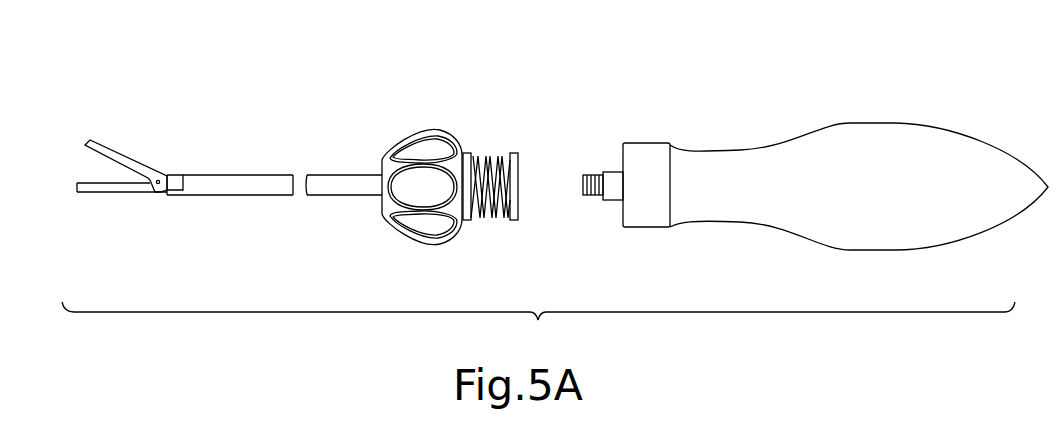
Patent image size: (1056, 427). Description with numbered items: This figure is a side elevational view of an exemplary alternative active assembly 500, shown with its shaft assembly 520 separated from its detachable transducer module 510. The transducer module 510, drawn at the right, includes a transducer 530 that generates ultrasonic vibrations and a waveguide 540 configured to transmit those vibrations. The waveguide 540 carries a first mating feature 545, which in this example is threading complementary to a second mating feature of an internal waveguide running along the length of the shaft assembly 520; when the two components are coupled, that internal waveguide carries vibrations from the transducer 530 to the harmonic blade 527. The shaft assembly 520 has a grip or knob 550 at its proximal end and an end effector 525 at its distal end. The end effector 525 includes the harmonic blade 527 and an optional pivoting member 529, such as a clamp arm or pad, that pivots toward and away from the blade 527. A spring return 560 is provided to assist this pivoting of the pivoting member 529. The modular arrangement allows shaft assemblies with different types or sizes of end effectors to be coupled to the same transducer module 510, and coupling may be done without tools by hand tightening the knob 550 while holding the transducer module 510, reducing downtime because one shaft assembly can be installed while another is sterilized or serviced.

The active assembly 500 is at (503, 63).
The transducer module 510 is at (903, 123).
The shaft assembly 520 is at (265, 175).
The end effector 525 is at (94, 197).
The harmonic blade 527 is at (128, 194).
The pivoting member 529 is at (115, 153).
The transducer 530 is at (865, 218).
The waveguide 540 is at (613, 172).
The first mating feature 545 is at (595, 175).
The knob 550 is at (432, 142).
The spring return 560 is at (498, 222).